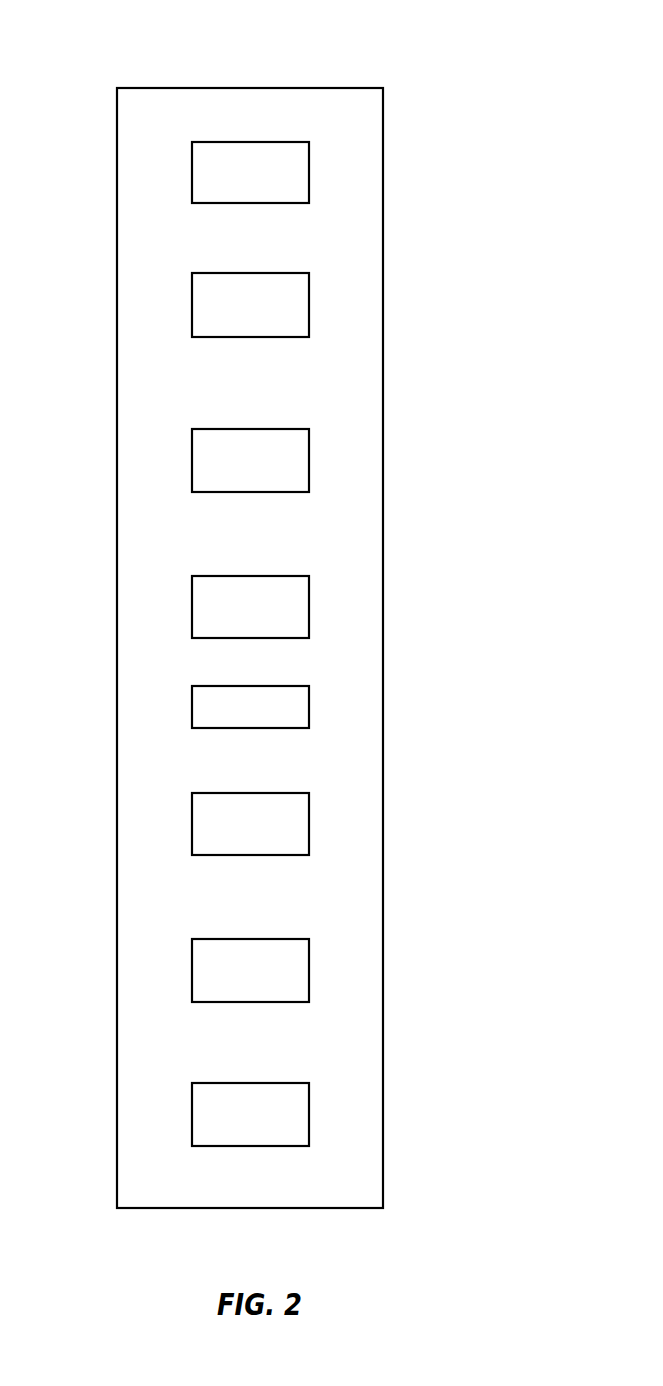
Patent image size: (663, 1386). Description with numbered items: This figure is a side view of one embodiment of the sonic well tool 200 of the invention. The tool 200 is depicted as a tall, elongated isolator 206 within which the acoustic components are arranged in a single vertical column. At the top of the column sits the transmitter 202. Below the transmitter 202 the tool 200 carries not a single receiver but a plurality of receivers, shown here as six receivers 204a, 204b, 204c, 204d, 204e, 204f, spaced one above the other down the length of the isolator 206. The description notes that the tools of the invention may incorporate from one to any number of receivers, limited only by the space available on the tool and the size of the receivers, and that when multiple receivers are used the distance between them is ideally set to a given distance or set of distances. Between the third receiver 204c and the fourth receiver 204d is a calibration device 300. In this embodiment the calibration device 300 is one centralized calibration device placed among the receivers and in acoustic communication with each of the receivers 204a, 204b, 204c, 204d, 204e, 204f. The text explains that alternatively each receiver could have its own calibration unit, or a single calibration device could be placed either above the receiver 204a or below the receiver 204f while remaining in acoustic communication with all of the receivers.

The sonic well tool 200 is at (330, 55).
The transmitter 202 is at (275, 191).
The receiver 204a is at (282, 323).
The receiver 204b is at (282, 479).
The receiver 204c is at (282, 625).
The receiver 204d is at (282, 842).
The receiver 204e is at (282, 988).
The receiver 204f is at (279, 1132).
The isolator 206 is at (307, 648).
The calibration device 300 is at (274, 723).